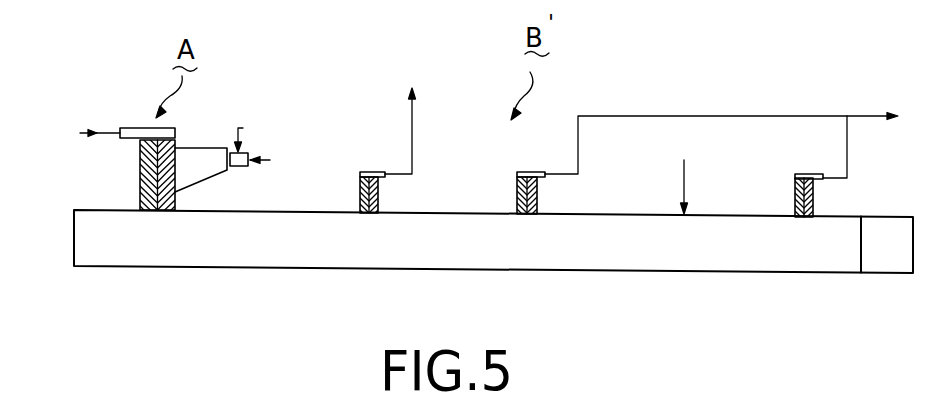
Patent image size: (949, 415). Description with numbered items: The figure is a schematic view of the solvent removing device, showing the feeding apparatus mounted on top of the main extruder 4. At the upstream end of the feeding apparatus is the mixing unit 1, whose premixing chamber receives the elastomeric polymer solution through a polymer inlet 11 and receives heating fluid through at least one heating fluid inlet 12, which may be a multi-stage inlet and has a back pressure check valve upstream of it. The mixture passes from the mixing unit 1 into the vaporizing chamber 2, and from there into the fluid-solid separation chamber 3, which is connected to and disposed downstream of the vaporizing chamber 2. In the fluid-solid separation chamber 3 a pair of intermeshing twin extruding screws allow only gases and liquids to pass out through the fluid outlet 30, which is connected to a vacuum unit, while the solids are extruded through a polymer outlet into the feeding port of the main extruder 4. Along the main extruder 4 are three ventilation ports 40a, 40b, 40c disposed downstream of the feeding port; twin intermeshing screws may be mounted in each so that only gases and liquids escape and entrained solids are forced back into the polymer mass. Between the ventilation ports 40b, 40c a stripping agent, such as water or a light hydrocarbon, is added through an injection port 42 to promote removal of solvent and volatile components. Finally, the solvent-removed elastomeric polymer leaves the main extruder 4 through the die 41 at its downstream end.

The mixing unit 1 is at (241, 167).
The vaporizing chamber 2 is at (198, 156).
The fluid-solid separation chamber 3 is at (150, 183).
The main extruder 4 is at (203, 250).
The polymer inlet 11 is at (270, 160).
The heating fluid inlet 12 is at (243, 128).
The fluid outlet 30 is at (84, 130).
The ventilation port 40a is at (378, 194).
The ventilation port 40b is at (537, 195).
The ventilation port 40c is at (813, 194).
The die 41 is at (884, 245).
The injection port 42 is at (684, 182).